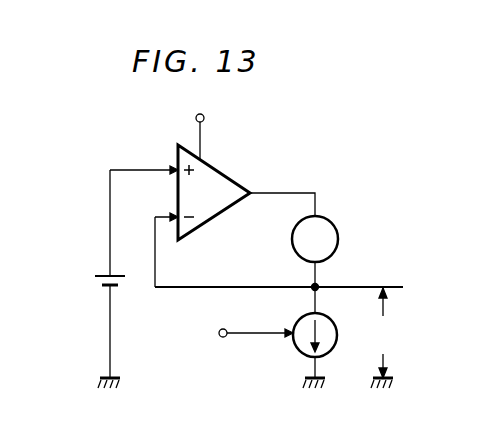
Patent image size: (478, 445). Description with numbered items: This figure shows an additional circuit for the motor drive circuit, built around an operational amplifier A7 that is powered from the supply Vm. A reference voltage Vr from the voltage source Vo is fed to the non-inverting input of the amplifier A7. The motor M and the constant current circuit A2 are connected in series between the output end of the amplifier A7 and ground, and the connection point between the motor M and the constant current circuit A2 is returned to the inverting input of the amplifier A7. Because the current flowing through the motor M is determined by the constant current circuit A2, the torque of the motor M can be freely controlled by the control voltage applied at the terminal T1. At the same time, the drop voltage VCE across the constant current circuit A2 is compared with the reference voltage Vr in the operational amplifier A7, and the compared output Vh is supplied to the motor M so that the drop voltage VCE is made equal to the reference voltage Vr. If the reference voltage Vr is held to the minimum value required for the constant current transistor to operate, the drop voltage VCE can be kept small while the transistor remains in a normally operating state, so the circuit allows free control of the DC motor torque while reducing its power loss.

The operational amplifier A7 is at (223, 170).
The supply voltage Vm is at (221, 132).
The reference voltage Vr is at (110, 183).
The voltage source Vo is at (107, 286).
The compared output Vh is at (290, 192).
The motor M is at (338, 241).
The constant current circuit A2 is at (294, 337).
The terminal T1 is at (224, 337).
The drop voltage VCE is at (389, 337).